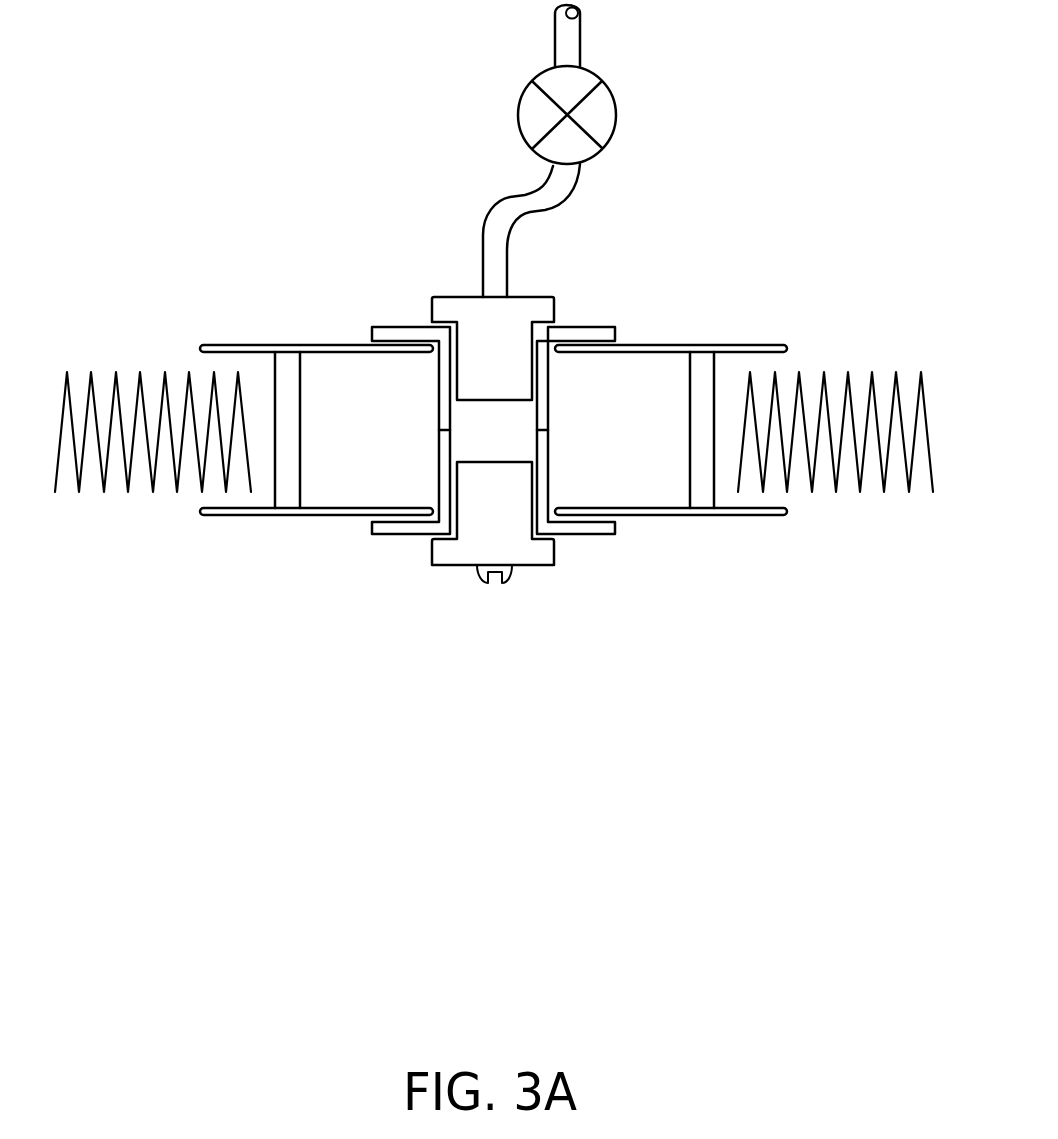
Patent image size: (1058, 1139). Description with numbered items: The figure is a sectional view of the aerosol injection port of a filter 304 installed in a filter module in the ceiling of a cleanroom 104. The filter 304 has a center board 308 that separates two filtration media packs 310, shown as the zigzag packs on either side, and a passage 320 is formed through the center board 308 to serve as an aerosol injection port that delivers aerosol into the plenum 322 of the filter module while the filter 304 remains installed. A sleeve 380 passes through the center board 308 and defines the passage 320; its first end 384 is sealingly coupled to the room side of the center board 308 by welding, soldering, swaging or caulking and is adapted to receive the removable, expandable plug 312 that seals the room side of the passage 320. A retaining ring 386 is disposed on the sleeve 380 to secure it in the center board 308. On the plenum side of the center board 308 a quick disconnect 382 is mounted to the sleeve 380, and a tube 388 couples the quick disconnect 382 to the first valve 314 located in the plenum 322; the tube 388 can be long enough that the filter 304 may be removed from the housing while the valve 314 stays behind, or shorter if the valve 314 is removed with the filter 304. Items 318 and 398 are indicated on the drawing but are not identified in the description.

The cleanroom 104 is at (348, 803).
The filter 304 is at (398, 578).
The center board 308 is at (750, 345).
The filtration media packs 310 is at (102, 477).
The removable expandable plug 312 is at (537, 567).
The first valve 314 is at (616, 113).
The inlet tube 318 is at (555, 40).
The passage 320 is at (493, 428).
The plenum 322 is at (278, 115).
The sleeve 380 is at (438, 387).
The quick disconnect 382 is at (448, 297).
The first end 384 is at (577, 535).
The retaining ring 386 is at (558, 326).
The tube 388 is at (495, 200).
The slot 398 is at (570, 322).